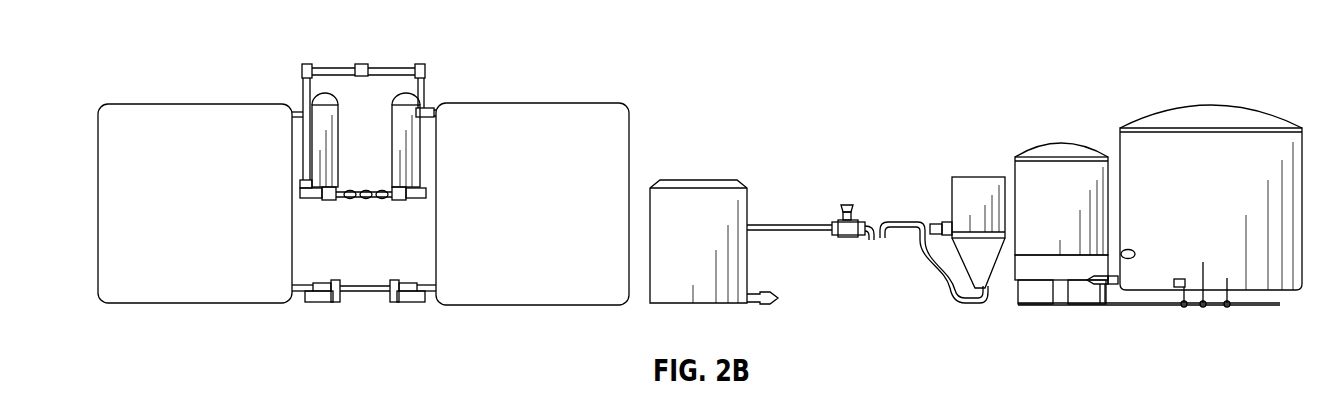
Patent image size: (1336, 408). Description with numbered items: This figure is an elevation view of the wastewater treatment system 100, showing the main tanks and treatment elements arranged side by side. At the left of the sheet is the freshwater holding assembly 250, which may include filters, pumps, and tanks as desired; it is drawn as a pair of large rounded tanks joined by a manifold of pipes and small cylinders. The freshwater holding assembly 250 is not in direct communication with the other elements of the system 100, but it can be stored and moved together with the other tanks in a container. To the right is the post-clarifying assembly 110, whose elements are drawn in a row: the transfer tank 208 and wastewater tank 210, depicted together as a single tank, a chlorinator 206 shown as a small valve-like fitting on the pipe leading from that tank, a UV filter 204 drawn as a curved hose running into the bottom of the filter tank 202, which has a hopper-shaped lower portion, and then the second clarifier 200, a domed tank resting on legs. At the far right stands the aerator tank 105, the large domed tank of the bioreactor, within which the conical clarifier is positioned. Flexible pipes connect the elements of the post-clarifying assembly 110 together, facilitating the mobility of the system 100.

The wastewater treatment system 100 is at (261, 45).
The freshwater holding assembly 250 is at (459, 61).
The post-clarifying assembly 110 is at (945, 82).
The transfer tank 208 is at (738, 207).
The wastewater tank 210 is at (708, 178).
The chlorinator 206 is at (845, 205).
The UV filter 204 is at (878, 238).
The filter tank 202 is at (984, 177).
The second clarifier 200 is at (1065, 143).
The aerator tank 105 is at (1195, 152).